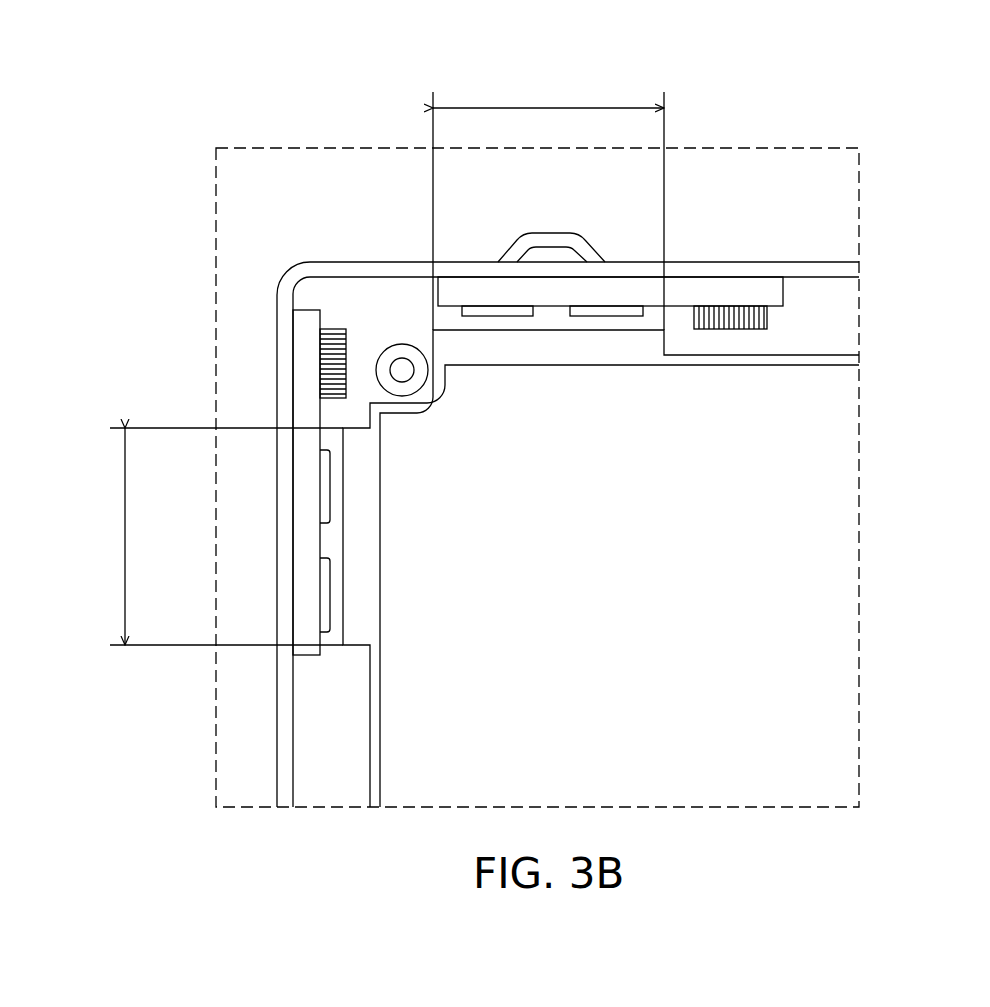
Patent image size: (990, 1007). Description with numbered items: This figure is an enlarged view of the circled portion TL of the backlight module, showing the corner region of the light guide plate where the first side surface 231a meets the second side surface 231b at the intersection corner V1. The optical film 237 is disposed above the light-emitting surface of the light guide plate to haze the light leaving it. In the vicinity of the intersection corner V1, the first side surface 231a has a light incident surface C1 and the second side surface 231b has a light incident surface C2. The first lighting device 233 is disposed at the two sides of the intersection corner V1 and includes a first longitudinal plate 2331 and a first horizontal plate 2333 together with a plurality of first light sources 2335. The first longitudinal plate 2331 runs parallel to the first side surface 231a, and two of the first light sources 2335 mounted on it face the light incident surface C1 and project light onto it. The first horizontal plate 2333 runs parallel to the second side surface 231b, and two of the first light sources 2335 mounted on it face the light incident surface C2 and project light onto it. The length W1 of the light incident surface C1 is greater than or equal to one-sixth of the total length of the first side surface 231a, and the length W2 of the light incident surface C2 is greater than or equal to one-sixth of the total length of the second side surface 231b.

The circled portion TL is at (875, 132).
The first side surface 231a is at (368, 757).
The second side surface 231b is at (822, 352).
The first lighting device 233 is at (502, 419).
The first longitudinal plate 2331 is at (303, 333).
The first horizontal plate 2333 is at (512, 292).
The first light sources 2335 is at (615, 310).
The optical film 237 is at (832, 687).
The light incident surface C1 is at (358, 577).
The light incident surface C2 is at (530, 343).
The intersection corner V1 is at (433, 398).
The length of light incident surface C1 W1 is at (98, 536).
The length of light incident surface C2 W2 is at (548, 88).